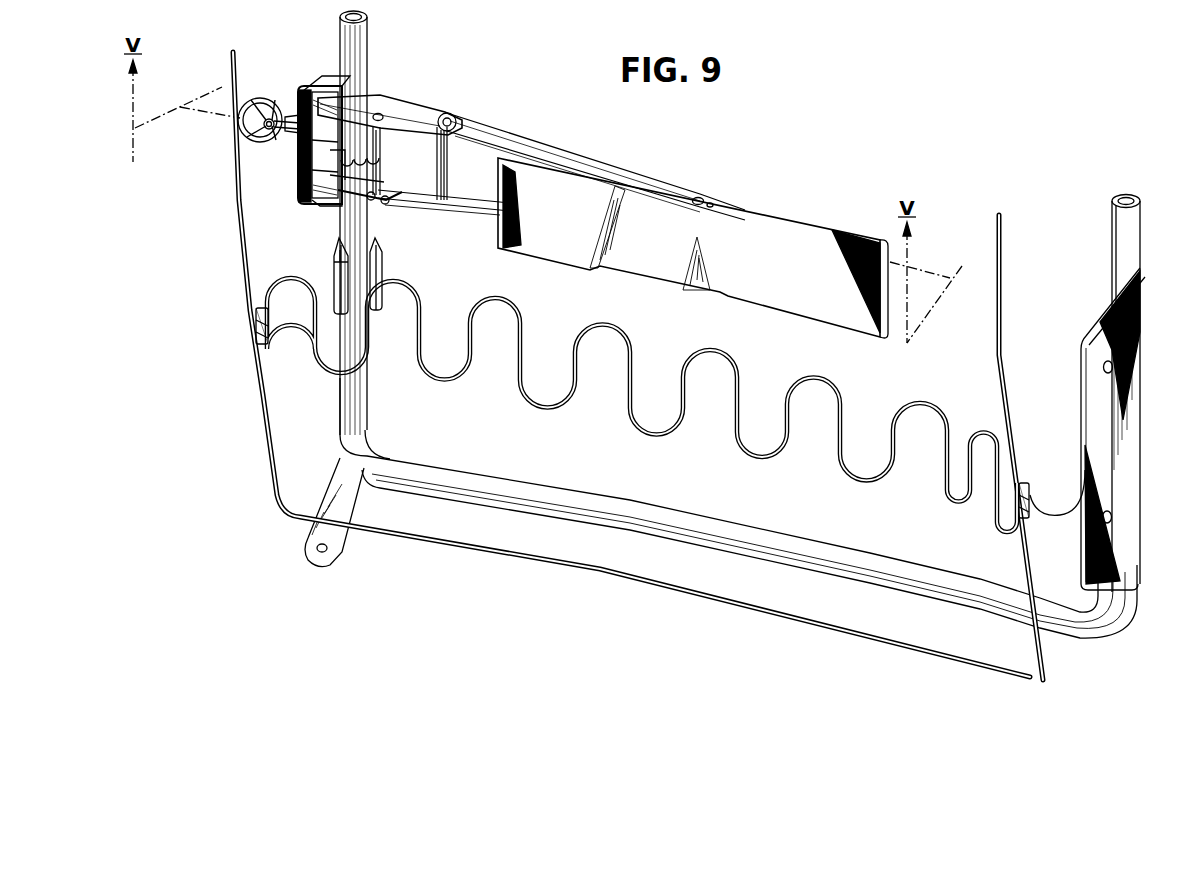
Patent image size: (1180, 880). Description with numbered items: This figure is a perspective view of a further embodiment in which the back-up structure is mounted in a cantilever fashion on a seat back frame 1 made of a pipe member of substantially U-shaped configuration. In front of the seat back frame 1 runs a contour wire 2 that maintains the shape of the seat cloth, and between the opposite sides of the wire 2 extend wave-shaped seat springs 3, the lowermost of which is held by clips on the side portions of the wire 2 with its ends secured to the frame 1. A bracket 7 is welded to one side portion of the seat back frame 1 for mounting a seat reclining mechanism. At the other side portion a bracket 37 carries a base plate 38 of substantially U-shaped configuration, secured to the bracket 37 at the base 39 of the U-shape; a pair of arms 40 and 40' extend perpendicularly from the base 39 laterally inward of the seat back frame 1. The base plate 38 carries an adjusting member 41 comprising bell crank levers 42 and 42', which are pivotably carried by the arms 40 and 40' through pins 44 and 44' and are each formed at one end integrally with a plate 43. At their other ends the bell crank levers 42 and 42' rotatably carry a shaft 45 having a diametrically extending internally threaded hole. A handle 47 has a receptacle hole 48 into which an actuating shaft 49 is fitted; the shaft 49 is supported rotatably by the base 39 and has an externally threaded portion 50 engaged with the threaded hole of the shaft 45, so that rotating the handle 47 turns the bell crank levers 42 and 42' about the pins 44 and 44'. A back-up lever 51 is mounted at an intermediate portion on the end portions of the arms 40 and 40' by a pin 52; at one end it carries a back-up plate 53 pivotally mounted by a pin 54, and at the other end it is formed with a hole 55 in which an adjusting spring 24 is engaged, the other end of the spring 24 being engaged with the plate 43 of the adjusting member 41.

The seat back frame 1 is at (755, 533).
The contour wire 2 is at (277, 505).
The seat spring 3 is at (737, 387).
The bracket 7 is at (1120, 425).
The adjusting spring 24 is at (298, 177).
The bracket 37 is at (322, 92).
The base plate 38 is at (393, 107).
The base 39 is at (307, 167).
The arm 40 is at (473, 105).
The arm 40' is at (415, 226).
The adjusting member 41 is at (332, 255).
The bell crank lever 42 is at (400, 78).
The bell crank lever 42' is at (392, 290).
The plate 43 is at (290, 208).
The pin 44 is at (446, 123).
The pin 44' is at (387, 216).
The shaft 45 is at (505, 128).
The handle 47 is at (254, 99).
The receptacle hole 48 is at (262, 101).
The actuating shaft 49 is at (293, 153).
The externally threaded portion 50 is at (343, 190).
The back-up lever 51 is at (548, 143).
The pin 52 is at (462, 210).
The back-up plate 53 is at (767, 230).
The pin 54 is at (702, 197).
The hole 55 is at (432, 205).